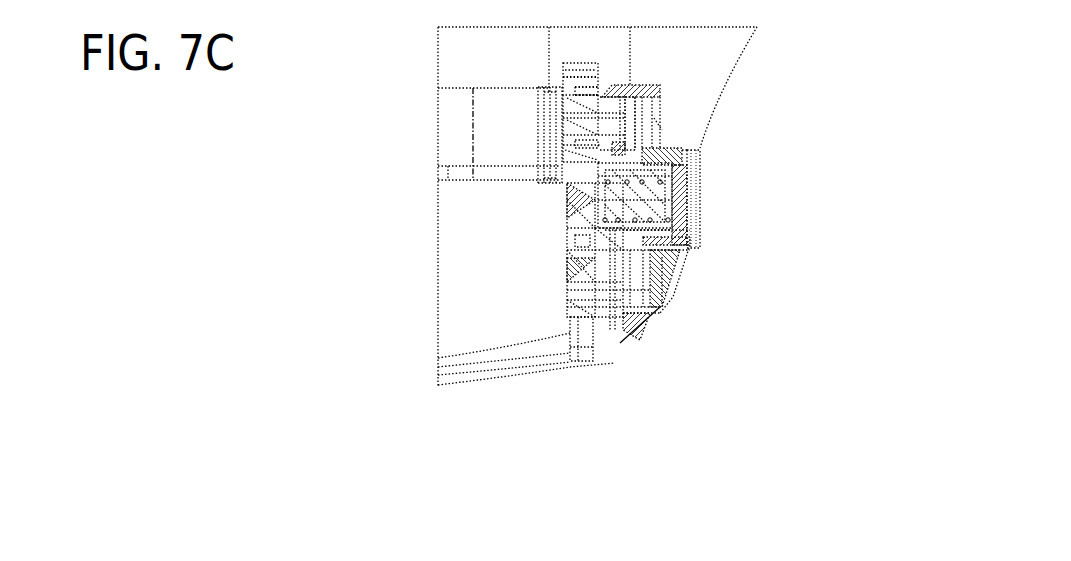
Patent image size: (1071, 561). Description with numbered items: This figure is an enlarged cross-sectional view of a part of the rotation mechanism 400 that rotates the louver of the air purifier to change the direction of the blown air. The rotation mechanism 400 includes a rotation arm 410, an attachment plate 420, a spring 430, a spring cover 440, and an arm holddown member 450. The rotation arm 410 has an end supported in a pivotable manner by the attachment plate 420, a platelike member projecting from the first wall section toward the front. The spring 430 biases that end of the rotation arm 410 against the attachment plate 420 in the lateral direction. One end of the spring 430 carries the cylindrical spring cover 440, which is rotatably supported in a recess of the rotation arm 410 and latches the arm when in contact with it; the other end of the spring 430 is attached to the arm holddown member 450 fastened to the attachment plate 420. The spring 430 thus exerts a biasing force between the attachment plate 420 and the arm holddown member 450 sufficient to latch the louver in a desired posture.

The rotation mechanism 400 is at (748, 149).
The rotation arm 410 is at (616, 236).
The attachment plate 420 is at (573, 135).
The spring 430 is at (672, 180).
The spring cover 440 is at (628, 308).
The arm holddown member 450 is at (692, 247).